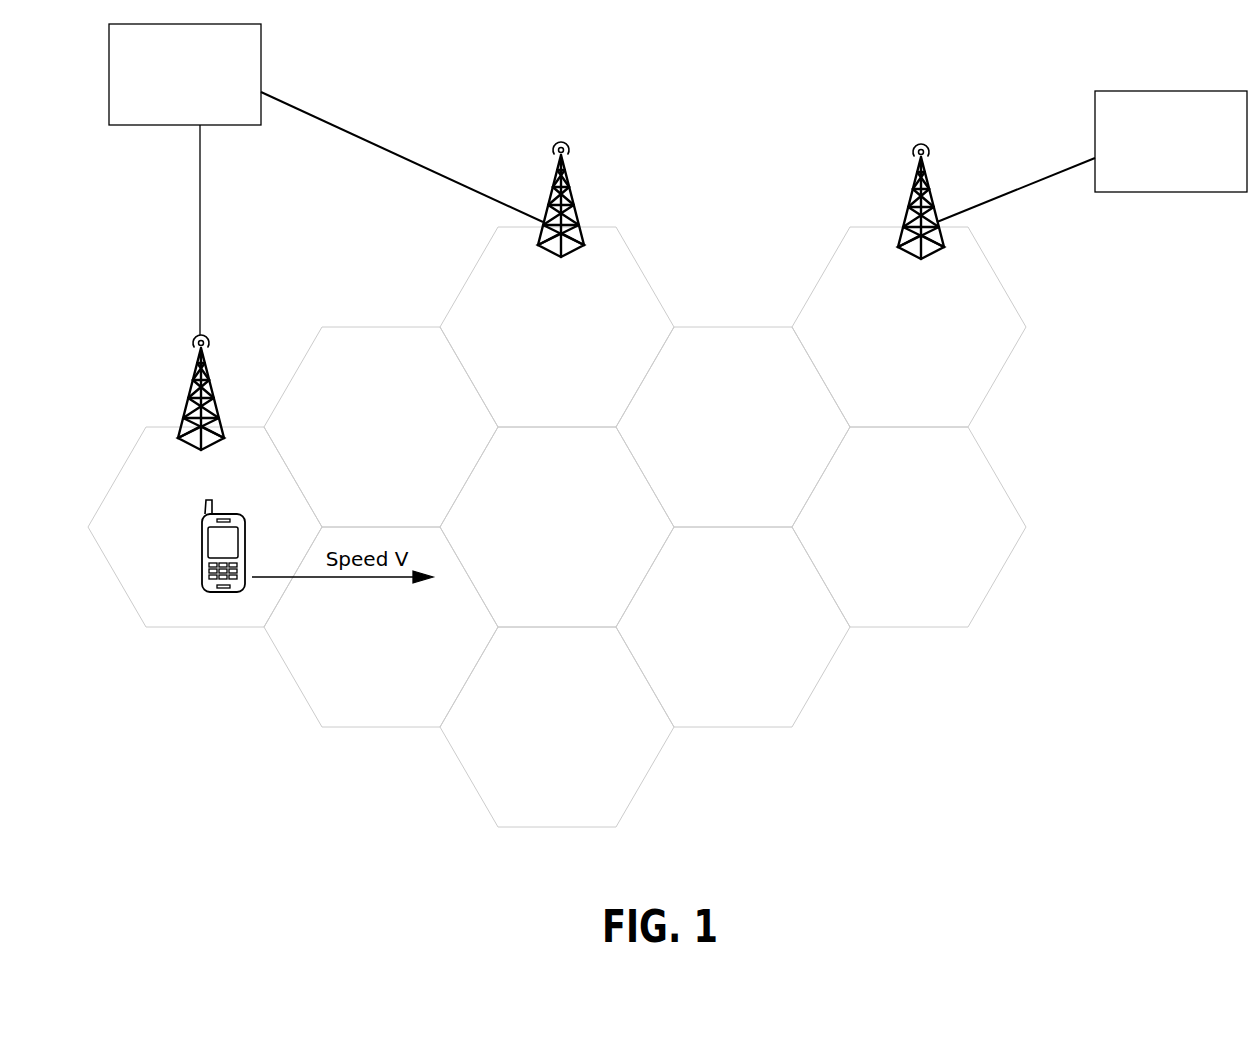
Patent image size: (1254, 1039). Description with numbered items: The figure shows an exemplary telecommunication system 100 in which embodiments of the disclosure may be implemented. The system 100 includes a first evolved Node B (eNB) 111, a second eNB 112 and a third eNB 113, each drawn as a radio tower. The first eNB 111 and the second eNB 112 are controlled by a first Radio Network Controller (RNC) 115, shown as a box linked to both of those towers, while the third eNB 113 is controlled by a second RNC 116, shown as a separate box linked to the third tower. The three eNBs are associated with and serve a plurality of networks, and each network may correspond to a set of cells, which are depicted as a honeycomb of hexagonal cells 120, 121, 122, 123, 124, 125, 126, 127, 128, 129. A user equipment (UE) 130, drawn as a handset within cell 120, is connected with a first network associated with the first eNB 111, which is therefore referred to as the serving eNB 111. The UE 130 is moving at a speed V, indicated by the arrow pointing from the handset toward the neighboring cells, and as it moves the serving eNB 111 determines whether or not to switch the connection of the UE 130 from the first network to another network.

The telecommunication system 100 is at (1168, 53).
The first evolved Node B 111 is at (178, 351).
The second evolved Node B 112 is at (543, 155).
The third evolved Node B 113 is at (888, 150).
The first Radio Network Controller 115 is at (166, 99).
The second Radio Network Controller 116 is at (1152, 166).
The cell 120 is at (189, 622).
The cell 121 is at (362, 518).
The cell 122 is at (365, 722).
The cell 123 is at (541, 422).
The cell 124 is at (539, 621).
The cell 125 is at (541, 821).
The cell 126 is at (716, 522).
The cell 127 is at (716, 722).
The cell 128 is at (894, 422).
The cell 129 is at (894, 622).
The user equipment 130 is at (202, 547).